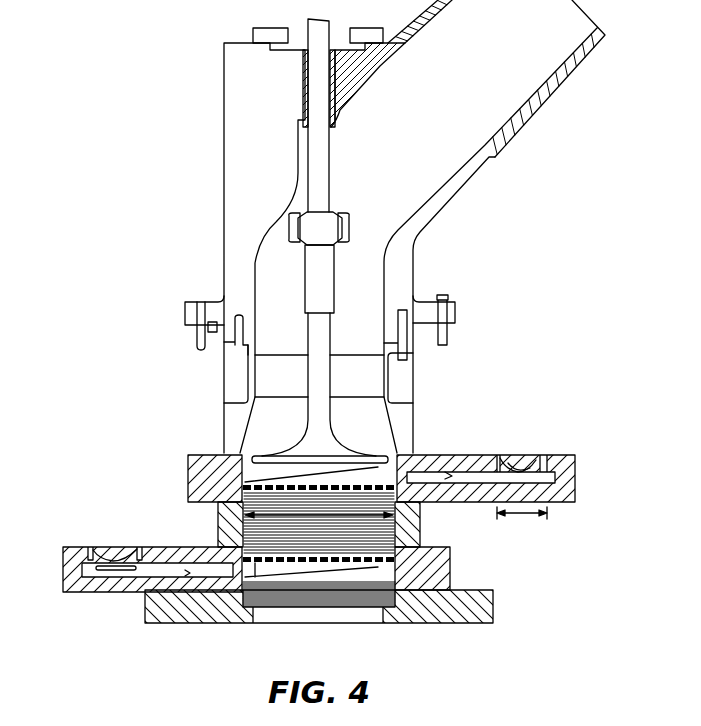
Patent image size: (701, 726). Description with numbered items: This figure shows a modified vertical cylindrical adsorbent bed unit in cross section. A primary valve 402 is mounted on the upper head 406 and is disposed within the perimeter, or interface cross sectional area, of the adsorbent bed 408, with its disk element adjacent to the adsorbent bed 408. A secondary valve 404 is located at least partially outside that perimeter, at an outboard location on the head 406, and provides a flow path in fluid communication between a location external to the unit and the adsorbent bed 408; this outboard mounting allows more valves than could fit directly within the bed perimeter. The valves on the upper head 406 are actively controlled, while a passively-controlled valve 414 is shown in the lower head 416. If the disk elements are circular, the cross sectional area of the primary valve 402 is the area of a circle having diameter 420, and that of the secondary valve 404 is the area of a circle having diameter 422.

The primary valve 402 is at (290, 452).
The secondary valve 404 is at (527, 470).
The head 406 is at (565, 482).
The adsorbent bed 408 is at (242, 530).
The passively-controlled valve 414 is at (277, 607).
The lower head 416 is at (86, 592).
The diameter 420 is at (353, 517).
The diameter 422 is at (522, 517).